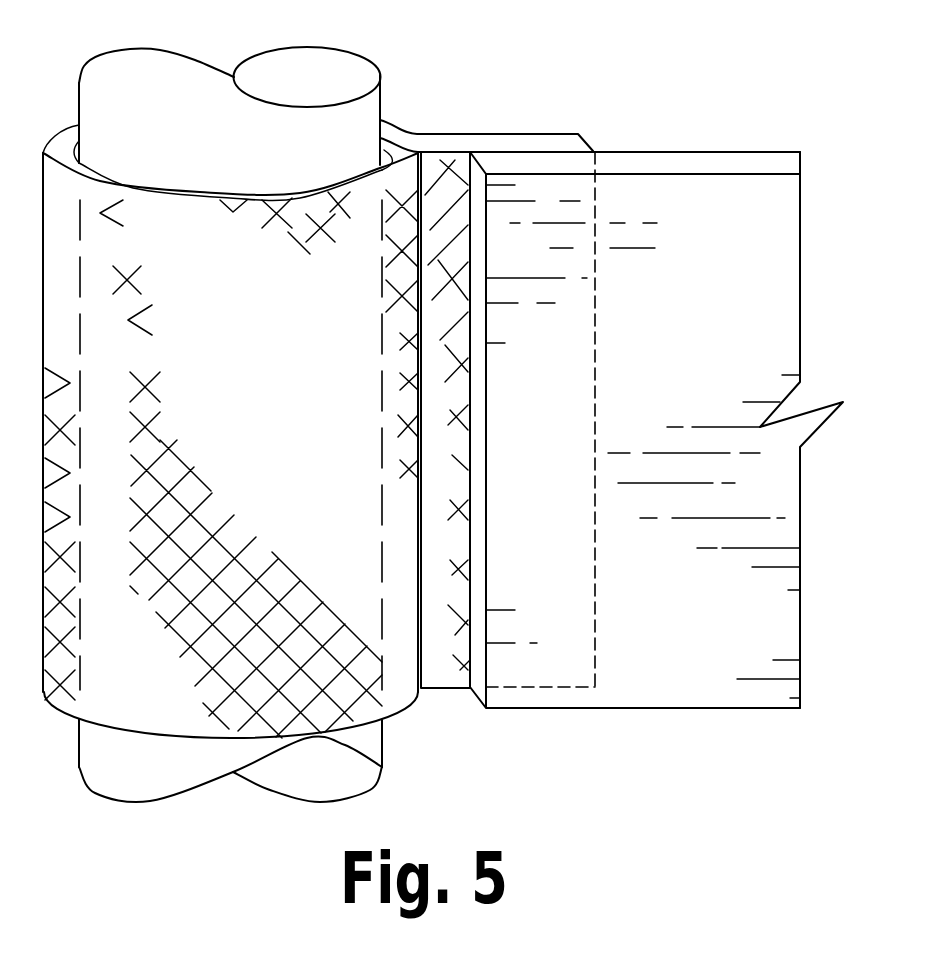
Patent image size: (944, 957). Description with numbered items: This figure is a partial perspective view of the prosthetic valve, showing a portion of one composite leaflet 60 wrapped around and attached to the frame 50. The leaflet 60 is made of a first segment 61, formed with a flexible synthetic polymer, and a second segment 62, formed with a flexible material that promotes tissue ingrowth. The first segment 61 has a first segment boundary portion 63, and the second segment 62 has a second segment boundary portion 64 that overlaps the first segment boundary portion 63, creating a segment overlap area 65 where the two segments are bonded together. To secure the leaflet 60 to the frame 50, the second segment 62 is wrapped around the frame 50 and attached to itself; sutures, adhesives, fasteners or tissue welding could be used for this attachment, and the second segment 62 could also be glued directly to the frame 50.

The frame 50 is at (145, 50).
The medical valve leaflet 60 is at (742, 667).
The first segment 61 is at (775, 622).
The second segment 62 is at (447, 667).
The first segment boundary portion 63 is at (573, 215).
The second segment boundary portion 64 is at (533, 142).
The segment overlap area 65 is at (565, 660).